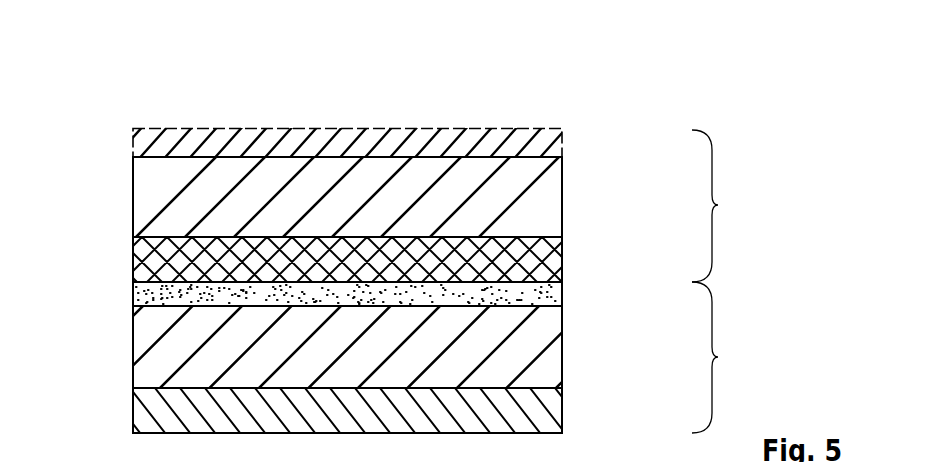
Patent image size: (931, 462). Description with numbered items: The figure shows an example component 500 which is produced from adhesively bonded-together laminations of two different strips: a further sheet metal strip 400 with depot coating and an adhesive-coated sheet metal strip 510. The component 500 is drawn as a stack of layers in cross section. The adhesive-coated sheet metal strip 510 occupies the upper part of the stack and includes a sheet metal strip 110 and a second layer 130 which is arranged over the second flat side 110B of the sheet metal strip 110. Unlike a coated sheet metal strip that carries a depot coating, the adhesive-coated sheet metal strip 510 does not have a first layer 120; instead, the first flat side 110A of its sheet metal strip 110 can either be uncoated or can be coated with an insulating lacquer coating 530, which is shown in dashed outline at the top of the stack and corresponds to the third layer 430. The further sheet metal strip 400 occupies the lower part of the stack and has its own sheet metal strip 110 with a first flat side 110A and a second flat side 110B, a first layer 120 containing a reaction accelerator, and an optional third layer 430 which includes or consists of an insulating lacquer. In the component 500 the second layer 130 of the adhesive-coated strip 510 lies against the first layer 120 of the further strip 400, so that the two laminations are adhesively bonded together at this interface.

The component 500 is at (663, 92).
The insulating lacquer coating 530 is at (552, 146).
The sheet metal strip 110 is at (552, 197).
The first flat side 110A is at (150, 158).
The second flat side 110B is at (150, 236).
The second layer 130 is at (552, 250).
The first layer 120 is at (552, 296).
The third layer 430 is at (552, 413).
The adhesive-coated sheet metal strip 510 is at (730, 206).
The further sheet metal strip 400 is at (730, 357).